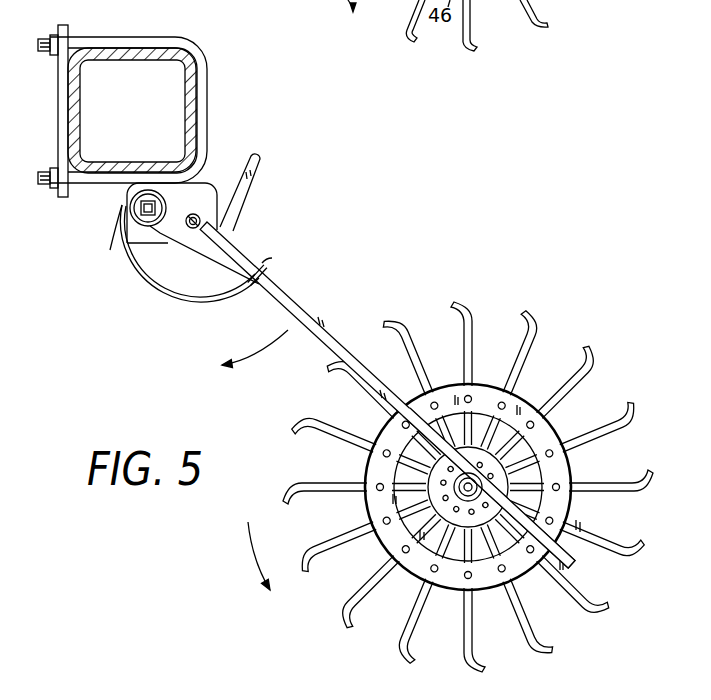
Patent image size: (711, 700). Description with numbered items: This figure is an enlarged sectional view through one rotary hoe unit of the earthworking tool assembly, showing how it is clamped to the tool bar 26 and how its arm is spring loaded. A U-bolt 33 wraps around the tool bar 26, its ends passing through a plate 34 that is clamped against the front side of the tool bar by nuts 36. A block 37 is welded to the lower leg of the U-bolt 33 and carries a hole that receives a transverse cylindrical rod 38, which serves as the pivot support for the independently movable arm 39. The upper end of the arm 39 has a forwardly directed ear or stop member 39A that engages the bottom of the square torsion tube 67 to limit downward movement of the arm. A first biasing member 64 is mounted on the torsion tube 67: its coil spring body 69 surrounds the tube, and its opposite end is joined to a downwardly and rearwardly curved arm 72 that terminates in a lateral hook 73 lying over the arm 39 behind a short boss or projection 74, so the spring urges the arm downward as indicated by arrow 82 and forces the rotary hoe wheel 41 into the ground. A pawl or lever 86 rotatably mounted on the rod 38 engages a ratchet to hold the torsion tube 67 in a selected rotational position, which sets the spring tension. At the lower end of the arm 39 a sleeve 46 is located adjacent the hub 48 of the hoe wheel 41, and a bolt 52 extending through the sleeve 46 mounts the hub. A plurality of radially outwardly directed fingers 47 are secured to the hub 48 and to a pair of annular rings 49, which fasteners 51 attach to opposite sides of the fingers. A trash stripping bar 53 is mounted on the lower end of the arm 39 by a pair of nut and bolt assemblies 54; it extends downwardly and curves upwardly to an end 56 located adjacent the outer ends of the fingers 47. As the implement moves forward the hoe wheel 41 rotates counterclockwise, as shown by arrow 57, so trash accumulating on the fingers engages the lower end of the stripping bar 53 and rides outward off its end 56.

The tool bar 26 is at (186, 92).
The U-bolt 33 is at (143, 40).
The plate 34 is at (62, 98).
The nuts 36 is at (52, 34).
The block 37 is at (122, 192).
The transverse rod 38 is at (203, 218).
The arm 39 is at (387, 395).
The stop member 39A is at (165, 230).
The rotary hoe wheel 41 is at (488, 480).
The sleeve 46 is at (371, 589).
The fingers 47 is at (426, 351).
The hub 48 is at (488, 630).
The annular rings 49 is at (487, 395).
The fasteners 51 is at (550, 452).
The bolt 52 is at (477, 520).
The trash stripping bar 53 is at (603, 550).
The nut and bolt assemblies 54 is at (428, 408).
The end of stripper bar 56 is at (624, 426).
The arrow 57 is at (250, 553).
The first biasing member 64 is at (156, 266).
The torsion tube 67 is at (152, 190).
The coil spring body 69 is at (128, 262).
The curved arm 72 is at (182, 298).
The lateral hook 73 is at (268, 278).
The projection 74 is at (263, 263).
The arrow 82 is at (258, 345).
The pawl 86 is at (252, 168).